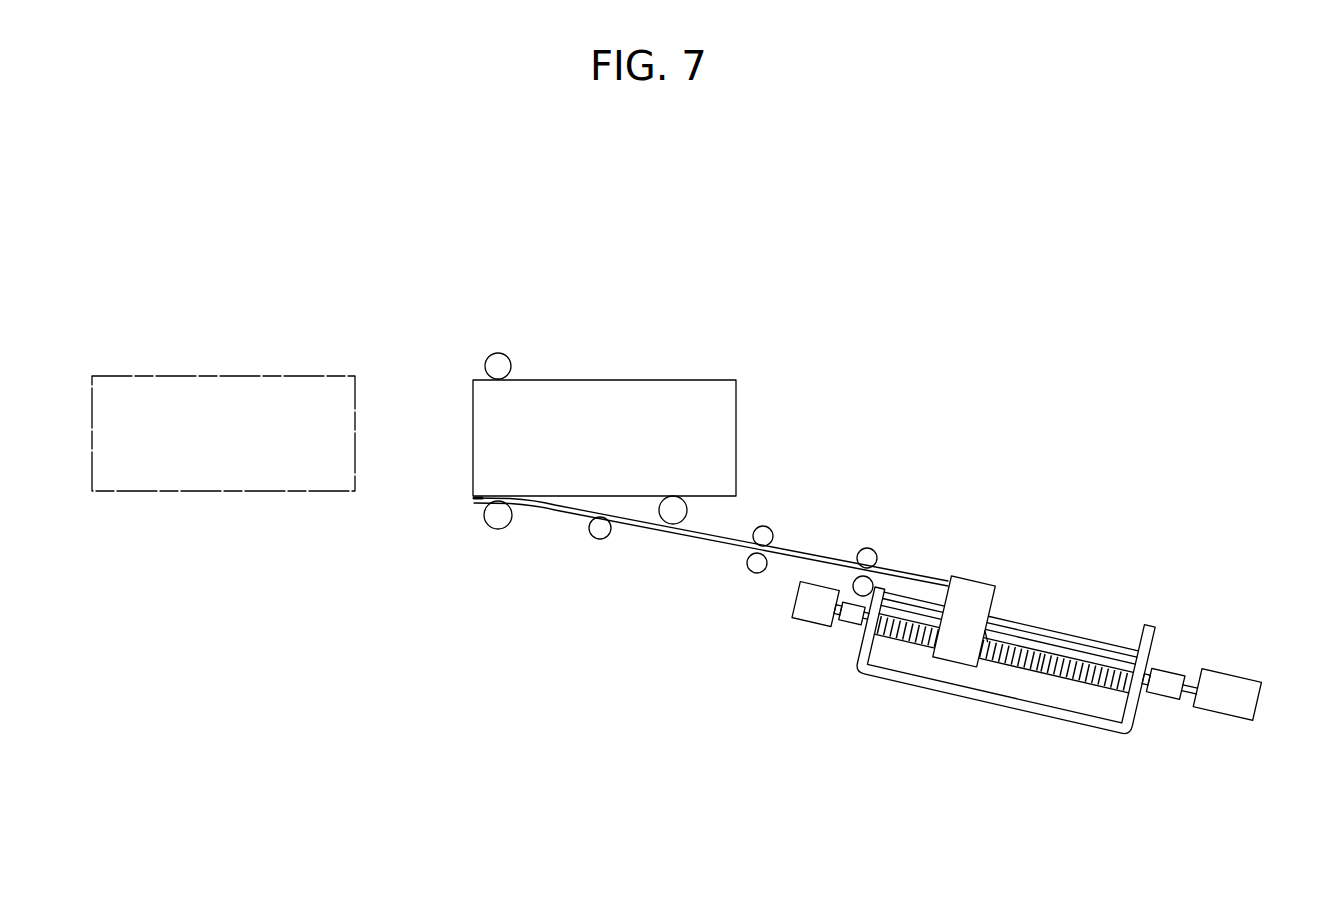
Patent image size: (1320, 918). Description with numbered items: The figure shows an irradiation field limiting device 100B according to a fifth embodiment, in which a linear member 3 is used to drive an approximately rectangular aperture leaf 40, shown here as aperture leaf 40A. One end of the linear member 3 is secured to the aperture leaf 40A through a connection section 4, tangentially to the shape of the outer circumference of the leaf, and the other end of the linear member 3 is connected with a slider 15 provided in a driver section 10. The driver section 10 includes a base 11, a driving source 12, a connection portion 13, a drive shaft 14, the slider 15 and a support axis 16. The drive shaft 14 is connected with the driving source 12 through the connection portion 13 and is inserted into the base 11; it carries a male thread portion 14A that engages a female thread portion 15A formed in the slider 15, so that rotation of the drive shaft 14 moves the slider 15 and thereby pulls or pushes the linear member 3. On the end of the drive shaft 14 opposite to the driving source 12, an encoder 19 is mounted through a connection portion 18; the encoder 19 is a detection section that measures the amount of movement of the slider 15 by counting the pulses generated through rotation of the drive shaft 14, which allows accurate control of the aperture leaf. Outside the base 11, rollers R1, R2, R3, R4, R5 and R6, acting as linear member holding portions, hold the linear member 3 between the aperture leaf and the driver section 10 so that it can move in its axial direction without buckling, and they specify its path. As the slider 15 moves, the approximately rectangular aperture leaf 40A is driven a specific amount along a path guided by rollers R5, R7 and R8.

The irradiation field limiting device 100B is at (614, 224).
The aperture leaf 40 is at (290, 355).
The aperture leaf 40A is at (656, 380).
The roller R8 is at (503, 354).
The roller R7 is at (499, 529).
The roller R6 is at (597, 539).
The roller R5 is at (669, 522).
The roller R4 is at (755, 574).
The roller R3 is at (769, 528).
The roller R2 is at (858, 577).
The roller R1 is at (874, 550).
The connection section 4 is at (474, 500).
The linear member 3 is at (712, 539).
The driver section 10 is at (1093, 523).
The base 11 is at (1117, 735).
The driving source 12 is at (1245, 722).
The connection portion 13 is at (1168, 698).
The drive shaft 14 is at (913, 648).
The male thread portion 14A is at (1077, 680).
The slider 15 is at (968, 572).
The female thread portion 15A is at (988, 637).
The support axis 16 is at (1100, 642).
The connection portion 18 is at (856, 626).
The encoder 19 is at (815, 622).